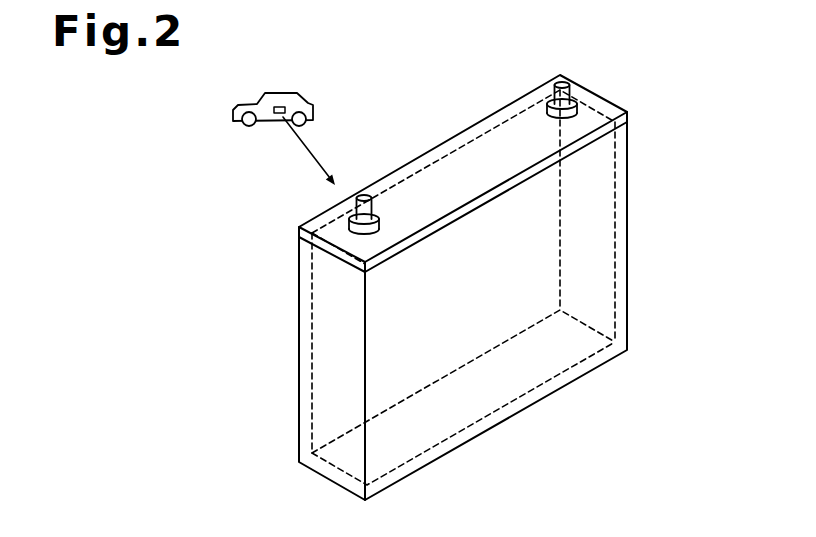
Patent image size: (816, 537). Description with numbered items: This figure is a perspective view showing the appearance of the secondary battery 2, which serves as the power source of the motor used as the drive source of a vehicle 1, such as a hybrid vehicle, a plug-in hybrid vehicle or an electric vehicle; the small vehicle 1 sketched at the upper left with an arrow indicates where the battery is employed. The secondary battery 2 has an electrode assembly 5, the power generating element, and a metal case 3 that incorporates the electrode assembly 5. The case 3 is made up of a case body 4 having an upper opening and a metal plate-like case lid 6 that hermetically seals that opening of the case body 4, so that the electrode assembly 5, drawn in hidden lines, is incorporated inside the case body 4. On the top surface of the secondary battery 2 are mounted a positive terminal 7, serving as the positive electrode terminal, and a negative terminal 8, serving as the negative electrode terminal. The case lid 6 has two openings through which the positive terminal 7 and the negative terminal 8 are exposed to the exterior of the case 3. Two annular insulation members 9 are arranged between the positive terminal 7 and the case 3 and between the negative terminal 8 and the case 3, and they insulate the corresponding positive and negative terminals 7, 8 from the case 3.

The vehicle 1 is at (292, 92).
The secondary battery 2 is at (487, 285).
The case 3 is at (502, 287).
The case body 4 is at (484, 311).
The electrode assembly 5 is at (309, 279).
The case lid 6 is at (628, 104).
The positive terminal 7 is at (372, 197).
The negative terminal 8 is at (555, 85).
The annular insulation member 9 is at (380, 225).